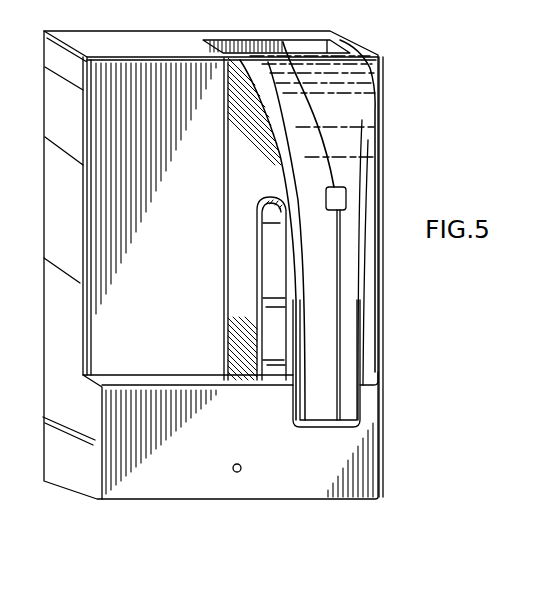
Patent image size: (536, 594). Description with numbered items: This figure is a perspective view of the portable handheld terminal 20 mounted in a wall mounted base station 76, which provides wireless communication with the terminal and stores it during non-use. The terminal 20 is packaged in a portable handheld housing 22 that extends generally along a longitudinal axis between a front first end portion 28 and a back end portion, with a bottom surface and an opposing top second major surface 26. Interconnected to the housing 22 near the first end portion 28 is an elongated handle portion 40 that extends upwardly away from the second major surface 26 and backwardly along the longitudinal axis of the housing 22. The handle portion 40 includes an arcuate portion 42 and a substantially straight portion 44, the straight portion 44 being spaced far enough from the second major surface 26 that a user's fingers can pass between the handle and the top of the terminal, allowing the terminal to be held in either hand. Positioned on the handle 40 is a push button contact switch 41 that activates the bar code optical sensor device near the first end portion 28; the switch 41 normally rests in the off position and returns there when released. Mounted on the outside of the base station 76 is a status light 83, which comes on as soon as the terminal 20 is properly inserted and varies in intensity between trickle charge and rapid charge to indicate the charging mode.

The portable handheld terminal 20 is at (423, 179).
The portable handheld housing 22 is at (358, 122).
The second major surface 26 is at (268, 272).
The first end portion 28 is at (348, 43).
The handle portion 40 is at (355, 327).
The push button contact switch 41 is at (346, 197).
The arcuate portion 42 is at (353, 177).
The substantially straight portion 44 is at (350, 405).
The wall mounted base station 76 is at (383, 474).
The status light 83 is at (238, 472).